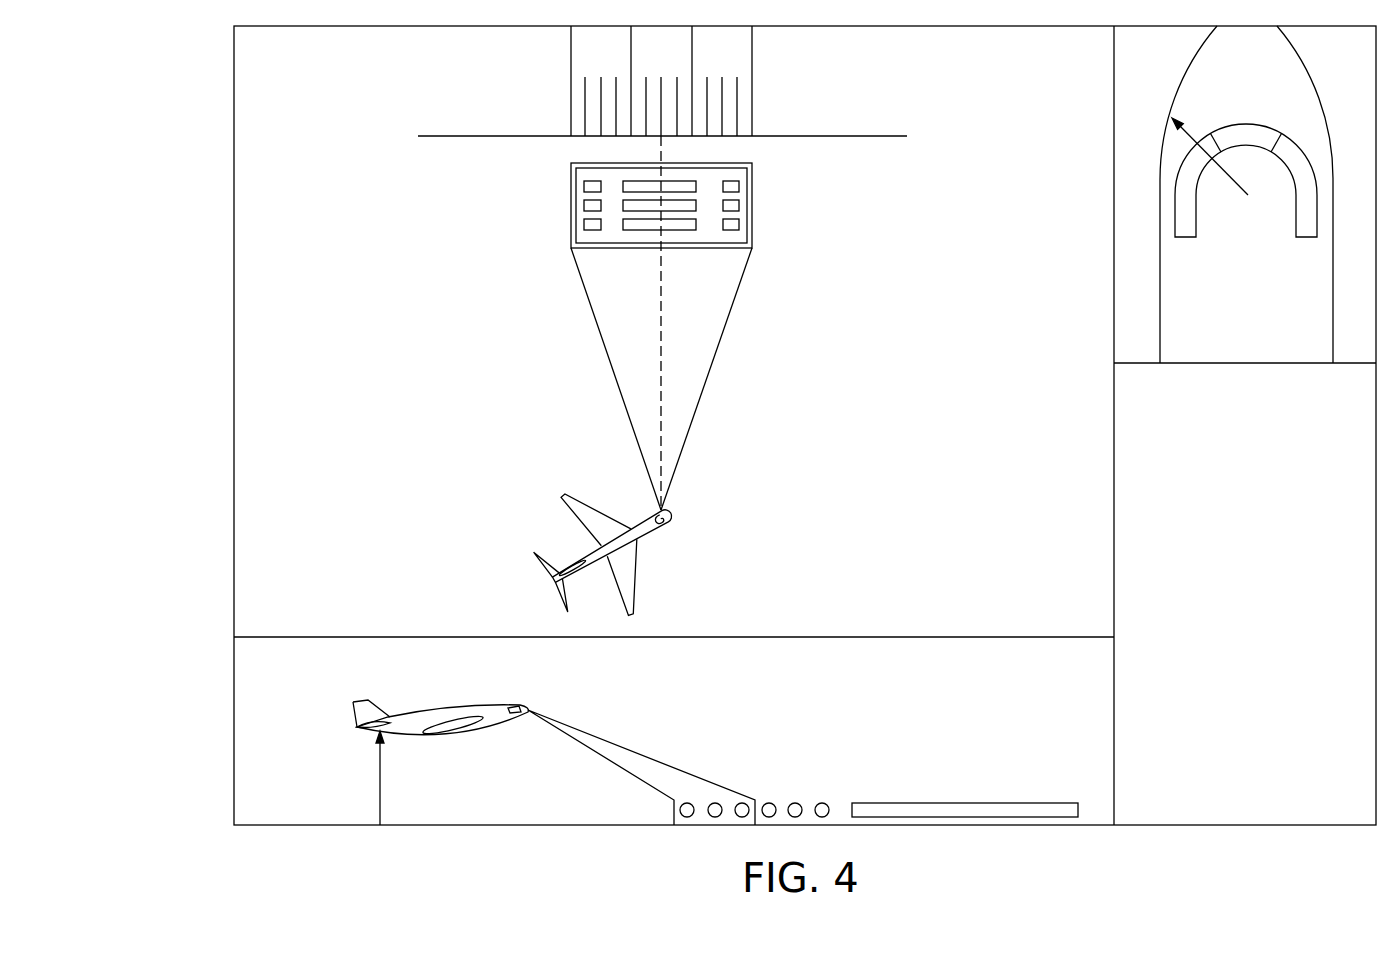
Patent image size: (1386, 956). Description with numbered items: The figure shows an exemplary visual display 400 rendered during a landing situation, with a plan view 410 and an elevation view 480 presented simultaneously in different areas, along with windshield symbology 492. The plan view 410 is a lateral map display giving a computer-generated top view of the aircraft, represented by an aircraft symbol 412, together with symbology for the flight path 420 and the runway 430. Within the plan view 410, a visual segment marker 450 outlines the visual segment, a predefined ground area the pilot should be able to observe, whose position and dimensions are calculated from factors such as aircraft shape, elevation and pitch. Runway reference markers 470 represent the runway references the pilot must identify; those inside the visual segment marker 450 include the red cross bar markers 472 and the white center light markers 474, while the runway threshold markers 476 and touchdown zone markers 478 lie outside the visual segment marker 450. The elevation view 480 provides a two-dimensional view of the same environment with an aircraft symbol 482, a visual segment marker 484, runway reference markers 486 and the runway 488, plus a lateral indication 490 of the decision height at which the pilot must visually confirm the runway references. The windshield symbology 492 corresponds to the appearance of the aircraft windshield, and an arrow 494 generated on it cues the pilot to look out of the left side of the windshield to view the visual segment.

The visual display 400 is at (212, 139).
The plan view 410 is at (247, 357).
The aircraft symbol 412 is at (582, 552).
The flight path 420 is at (657, 360).
The runway 430 is at (571, 62).
The visual segment marker 450 is at (655, 221).
The runway reference markers 470 is at (748, 186).
The red cross bar markers 472 is at (740, 225).
The white center light markers 474 is at (678, 230).
The runway threshold markers 476 is at (893, 138).
The touchdown zone markers 478 is at (738, 107).
The elevation view 480 is at (247, 688).
The aircraft symbol 482 is at (432, 708).
The visual segment marker 484 is at (674, 810).
The runway reference markers 486 is at (767, 802).
The runway 488 is at (923, 802).
The lateral indication 490 is at (377, 770).
The windshield symbology 492 is at (1295, 138).
The arrow 494 is at (1228, 180).